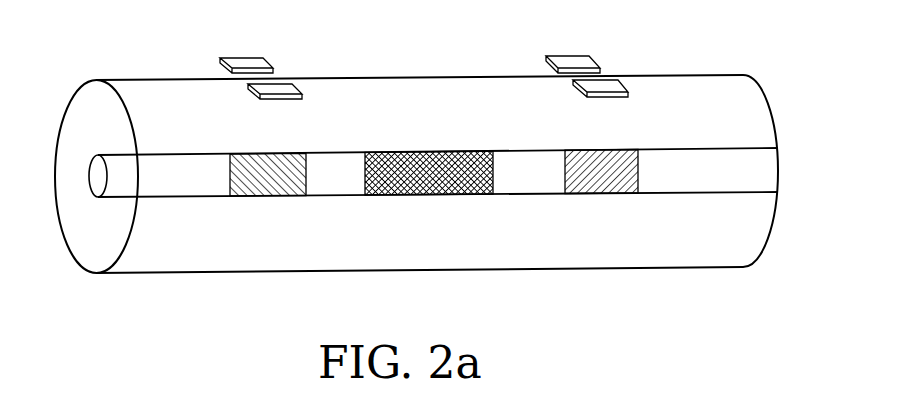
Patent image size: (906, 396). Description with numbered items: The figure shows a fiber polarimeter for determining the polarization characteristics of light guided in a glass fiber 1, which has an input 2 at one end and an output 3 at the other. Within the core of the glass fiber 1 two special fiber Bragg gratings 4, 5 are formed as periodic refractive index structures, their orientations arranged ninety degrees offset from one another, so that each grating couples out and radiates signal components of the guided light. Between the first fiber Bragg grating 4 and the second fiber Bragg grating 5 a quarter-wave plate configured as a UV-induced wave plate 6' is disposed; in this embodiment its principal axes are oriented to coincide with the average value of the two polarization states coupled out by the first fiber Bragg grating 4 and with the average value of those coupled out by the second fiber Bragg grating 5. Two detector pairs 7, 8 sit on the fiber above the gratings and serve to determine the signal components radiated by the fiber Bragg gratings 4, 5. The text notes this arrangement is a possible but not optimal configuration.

The glass fiber 1 is at (488, 271).
The input 2 is at (90, 178).
The output 3 is at (780, 172).
The first fiber Bragg grating 4 is at (252, 197).
The second fiber Bragg grating 5 is at (600, 193).
The UV-induced wave plate 6' is at (429, 192).
The first detector pair 7 is at (252, 58).
The second detector pair 8 is at (580, 55).